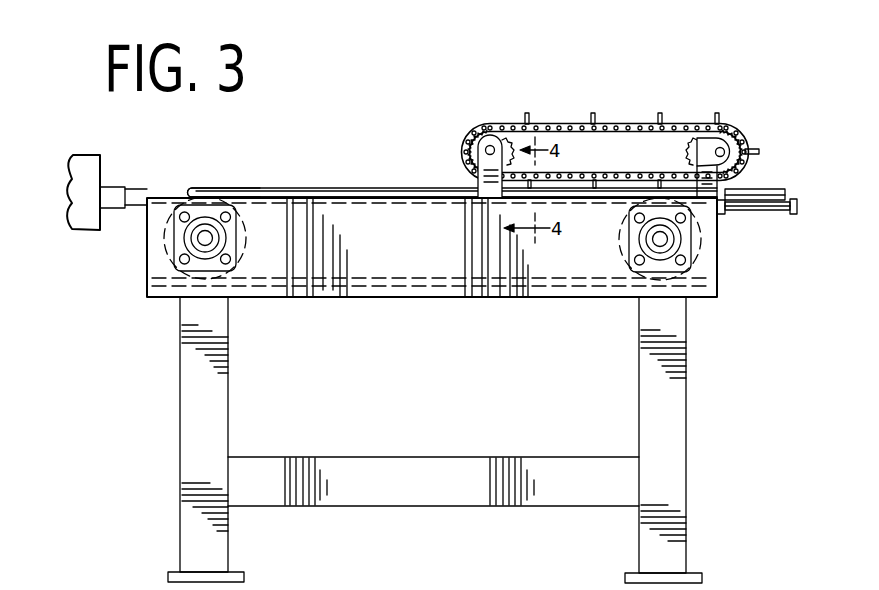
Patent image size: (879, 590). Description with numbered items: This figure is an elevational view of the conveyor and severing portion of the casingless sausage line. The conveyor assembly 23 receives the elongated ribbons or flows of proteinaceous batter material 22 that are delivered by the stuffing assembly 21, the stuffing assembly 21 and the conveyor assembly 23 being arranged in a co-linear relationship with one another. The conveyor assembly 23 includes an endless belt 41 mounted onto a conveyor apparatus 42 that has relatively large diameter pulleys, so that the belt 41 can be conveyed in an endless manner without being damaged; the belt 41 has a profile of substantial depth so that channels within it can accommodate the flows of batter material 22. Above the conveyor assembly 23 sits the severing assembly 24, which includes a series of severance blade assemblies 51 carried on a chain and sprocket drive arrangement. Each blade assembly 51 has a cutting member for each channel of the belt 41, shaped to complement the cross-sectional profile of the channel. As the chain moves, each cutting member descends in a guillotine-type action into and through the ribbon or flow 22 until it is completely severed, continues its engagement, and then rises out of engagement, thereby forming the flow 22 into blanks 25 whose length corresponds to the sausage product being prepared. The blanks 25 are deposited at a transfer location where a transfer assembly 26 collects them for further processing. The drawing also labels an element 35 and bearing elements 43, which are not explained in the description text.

The handwheel 21 is at (89, 240).
The upper rail 22 is at (333, 190).
The housing 23 is at (414, 248).
The chain 24 is at (541, 122).
The upper bar 25 is at (762, 188).
The lower bar 26 is at (762, 217).
The rail end 35 is at (215, 190).
The lower rail 41 is at (372, 196).
The legs 42 is at (228, 330).
The bearing 43 is at (152, 262).
The sprocket 51 is at (466, 177).